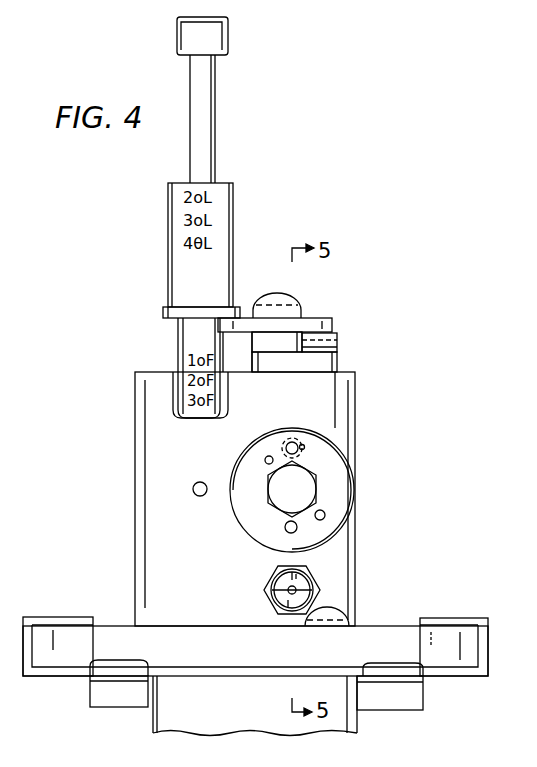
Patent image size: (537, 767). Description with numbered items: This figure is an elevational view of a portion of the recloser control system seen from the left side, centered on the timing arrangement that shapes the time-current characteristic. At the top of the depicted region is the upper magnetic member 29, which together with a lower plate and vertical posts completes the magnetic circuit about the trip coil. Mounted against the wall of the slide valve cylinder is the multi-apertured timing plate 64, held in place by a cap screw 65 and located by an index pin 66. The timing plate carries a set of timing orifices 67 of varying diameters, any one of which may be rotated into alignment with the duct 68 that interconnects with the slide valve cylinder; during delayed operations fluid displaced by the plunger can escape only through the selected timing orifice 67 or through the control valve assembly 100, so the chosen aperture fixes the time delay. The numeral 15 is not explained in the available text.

The knob 15 is at (228, 40).
The upper magnetic member 29 is at (473, 648).
The timing plate 64 is at (333, 462).
The cap screw 65 is at (313, 485).
The index pin 66 is at (327, 513).
The timing orifice 67 is at (265, 460).
The duct 68 is at (290, 441).
The control valve assembly 100 is at (317, 577).